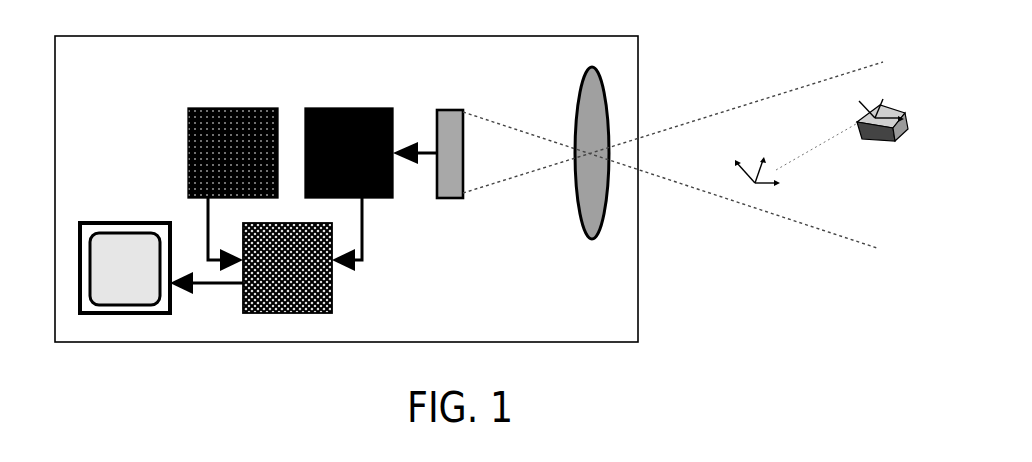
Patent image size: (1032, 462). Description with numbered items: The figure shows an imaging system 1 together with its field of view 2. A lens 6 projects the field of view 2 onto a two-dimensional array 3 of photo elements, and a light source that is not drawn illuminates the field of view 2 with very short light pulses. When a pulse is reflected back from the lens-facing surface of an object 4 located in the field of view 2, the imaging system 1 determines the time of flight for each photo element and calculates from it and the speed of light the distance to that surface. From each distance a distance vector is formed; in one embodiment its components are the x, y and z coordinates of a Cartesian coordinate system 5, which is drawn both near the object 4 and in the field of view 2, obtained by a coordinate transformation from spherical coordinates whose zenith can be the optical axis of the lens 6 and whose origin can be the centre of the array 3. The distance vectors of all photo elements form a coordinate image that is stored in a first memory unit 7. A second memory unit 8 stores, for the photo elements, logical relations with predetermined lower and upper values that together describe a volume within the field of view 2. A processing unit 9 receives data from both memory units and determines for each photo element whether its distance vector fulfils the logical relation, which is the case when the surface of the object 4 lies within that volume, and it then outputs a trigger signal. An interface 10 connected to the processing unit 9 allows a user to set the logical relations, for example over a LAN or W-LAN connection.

The imaging system 1 is at (52, 88).
The field of view 2 is at (855, 243).
The two-dimensional array 3 is at (450, 110).
The object 4 is at (903, 140).
The Cartesian coordinate system 5 is at (751, 182).
The lens 6 is at (592, 240).
The first memory unit 7 is at (347, 108).
The second memory unit 8 is at (239, 108).
The processing unit 9 is at (332, 305).
The interface 10 is at (92, 224).